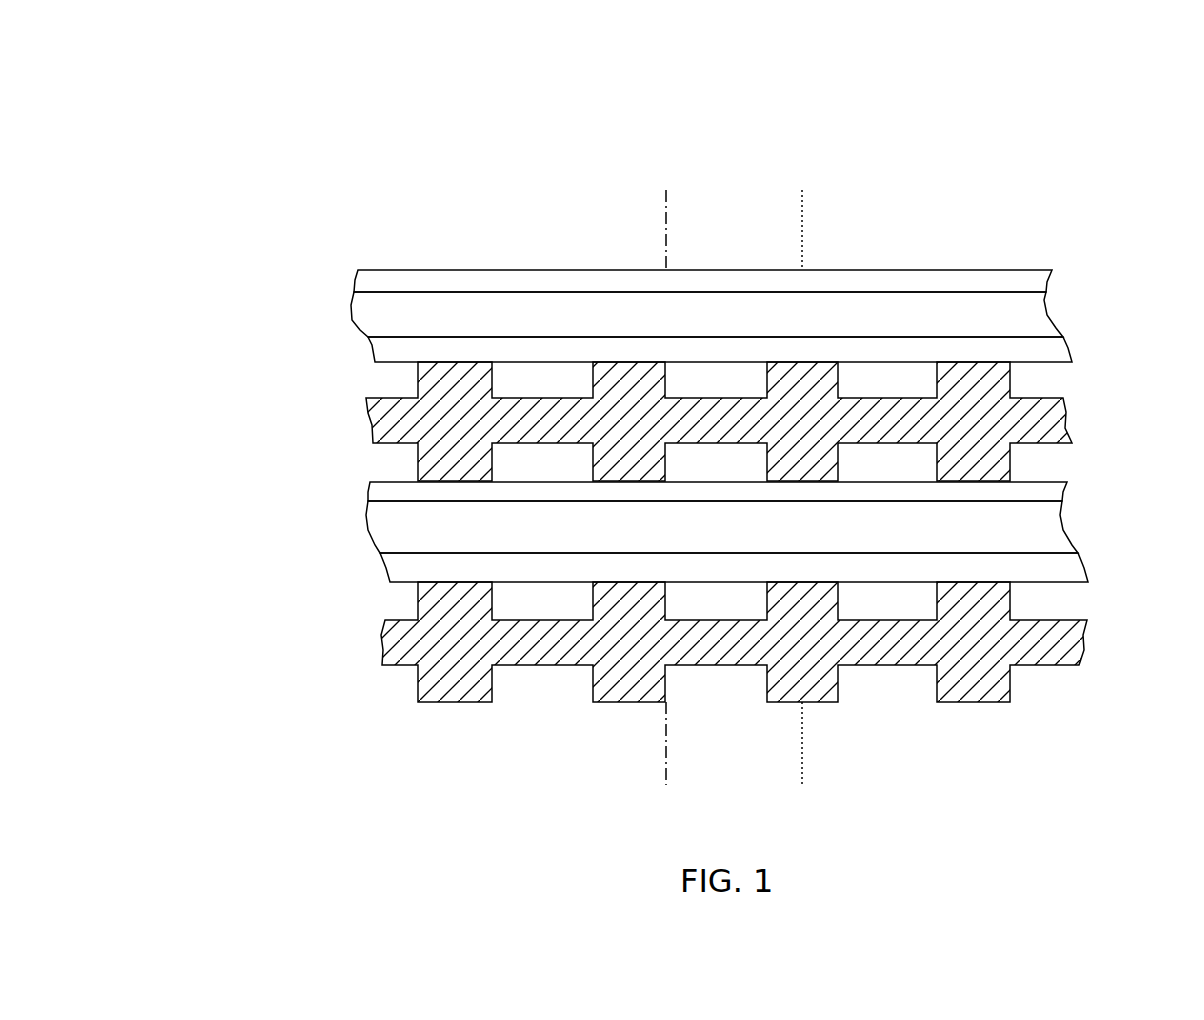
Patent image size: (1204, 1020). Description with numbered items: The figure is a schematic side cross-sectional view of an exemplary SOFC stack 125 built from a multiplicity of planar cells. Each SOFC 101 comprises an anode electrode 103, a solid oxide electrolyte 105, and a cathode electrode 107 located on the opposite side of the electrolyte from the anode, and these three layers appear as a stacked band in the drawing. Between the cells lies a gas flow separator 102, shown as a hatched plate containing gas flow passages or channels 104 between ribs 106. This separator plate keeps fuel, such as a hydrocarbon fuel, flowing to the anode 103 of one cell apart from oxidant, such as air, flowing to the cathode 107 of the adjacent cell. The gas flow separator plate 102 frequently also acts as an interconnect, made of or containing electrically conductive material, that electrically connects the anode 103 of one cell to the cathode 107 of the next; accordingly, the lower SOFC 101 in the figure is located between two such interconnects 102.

The SOFC stack 125 is at (302, 162).
The SOFC 101 is at (728, 417).
The gas flow separator 102 is at (728, 532).
The anode electrode 103 is at (357, 283).
The gas flow passages or channels 104 is at (702, 532).
The solid oxide electrolyte 105 is at (352, 318).
The ribs 106 is at (417, 385).
The cathode electrode 107 is at (377, 350).